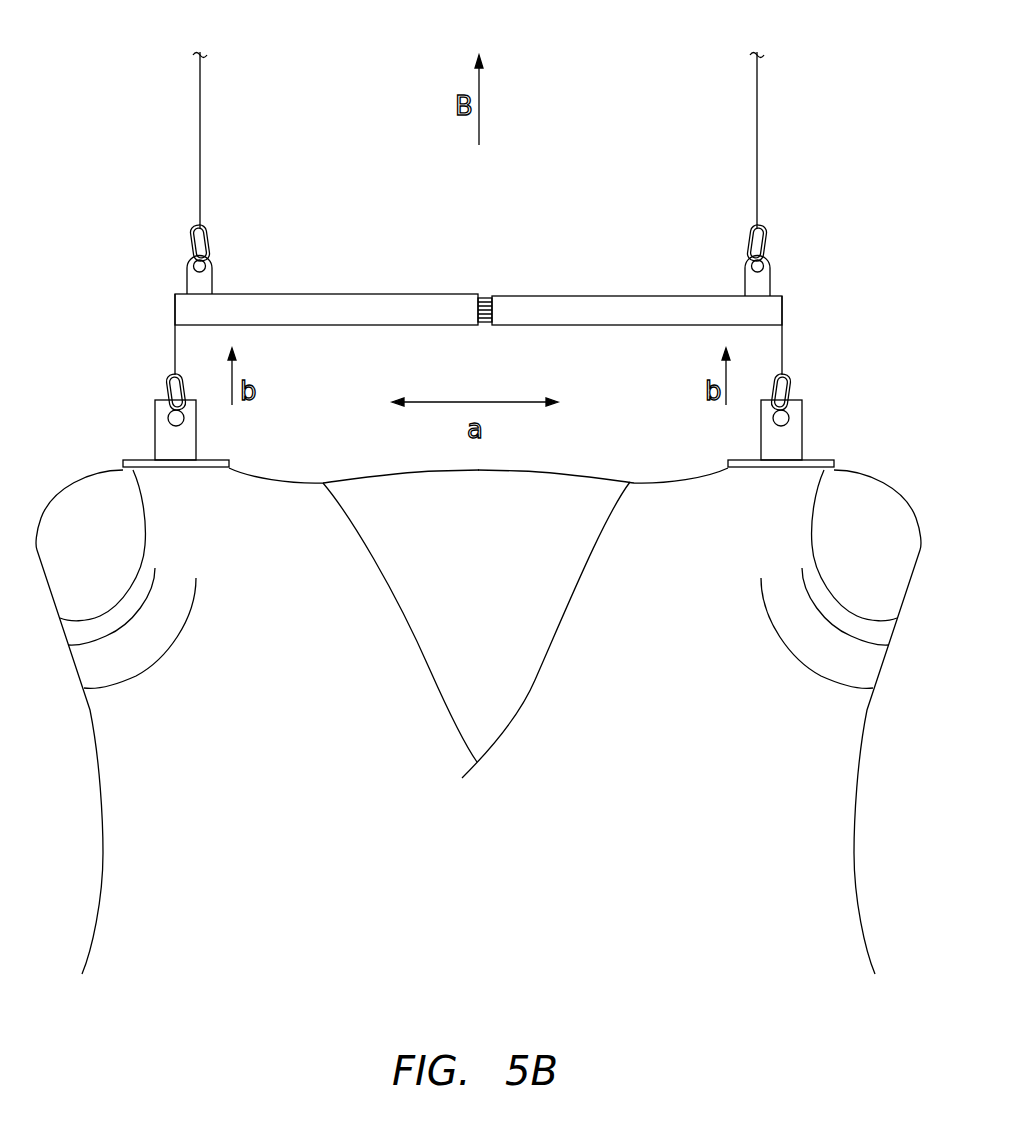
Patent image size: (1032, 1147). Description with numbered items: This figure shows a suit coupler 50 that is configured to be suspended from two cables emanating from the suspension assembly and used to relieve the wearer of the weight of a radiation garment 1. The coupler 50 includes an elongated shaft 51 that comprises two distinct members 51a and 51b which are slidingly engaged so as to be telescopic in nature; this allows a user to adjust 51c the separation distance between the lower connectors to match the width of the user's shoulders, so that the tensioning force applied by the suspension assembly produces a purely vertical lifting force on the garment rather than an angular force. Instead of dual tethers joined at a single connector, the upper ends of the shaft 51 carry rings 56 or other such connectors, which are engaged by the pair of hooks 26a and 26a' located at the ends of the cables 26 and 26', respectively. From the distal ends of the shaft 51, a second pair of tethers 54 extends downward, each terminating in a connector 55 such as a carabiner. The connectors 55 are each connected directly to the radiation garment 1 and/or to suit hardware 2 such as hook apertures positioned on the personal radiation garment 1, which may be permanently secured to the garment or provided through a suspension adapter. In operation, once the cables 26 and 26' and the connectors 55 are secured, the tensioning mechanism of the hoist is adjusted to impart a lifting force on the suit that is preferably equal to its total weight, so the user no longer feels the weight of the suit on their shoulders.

The suit coupler 50 is at (87, 85).
The cable 26 is at (155, 140).
The cable 26' is at (808, 140).
The hook 26a is at (145, 241).
The hook 26a' is at (818, 241).
The ring 56 is at (190, 278).
The second pair of tethers 54 is at (174, 357).
The connector 55 is at (166, 387).
The elongated shaft 51 is at (478, 302).
The first shaft member 51a is at (392, 328).
The second shaft member 51b is at (605, 318).
The adjustment 51c is at (490, 326).
The suit hardware 2 is at (192, 432).
The radiation garment 1 is at (291, 686).